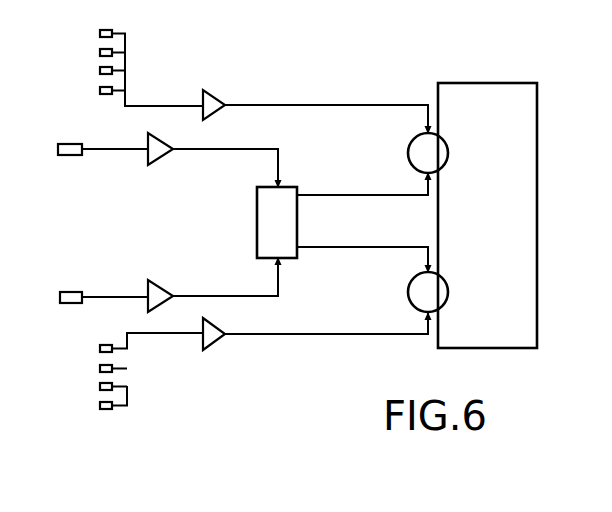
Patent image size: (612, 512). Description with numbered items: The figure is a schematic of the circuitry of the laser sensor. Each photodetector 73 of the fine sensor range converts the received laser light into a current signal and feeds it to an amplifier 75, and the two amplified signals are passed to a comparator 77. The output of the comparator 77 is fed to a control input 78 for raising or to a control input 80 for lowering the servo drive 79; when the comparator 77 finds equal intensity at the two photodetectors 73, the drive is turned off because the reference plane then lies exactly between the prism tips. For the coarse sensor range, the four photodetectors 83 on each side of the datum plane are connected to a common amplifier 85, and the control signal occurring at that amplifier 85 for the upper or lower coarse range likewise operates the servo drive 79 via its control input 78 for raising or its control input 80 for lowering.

The photodetector 73 is at (72, 145).
The amplifier 75 is at (160, 141).
The comparator 77 is at (265, 218).
The control input 78 is at (434, 142).
The servo drive 79 is at (520, 226).
The control input 80 is at (436, 281).
The photodetector 83 is at (100, 90).
The common amplifier 85 is at (213, 100).